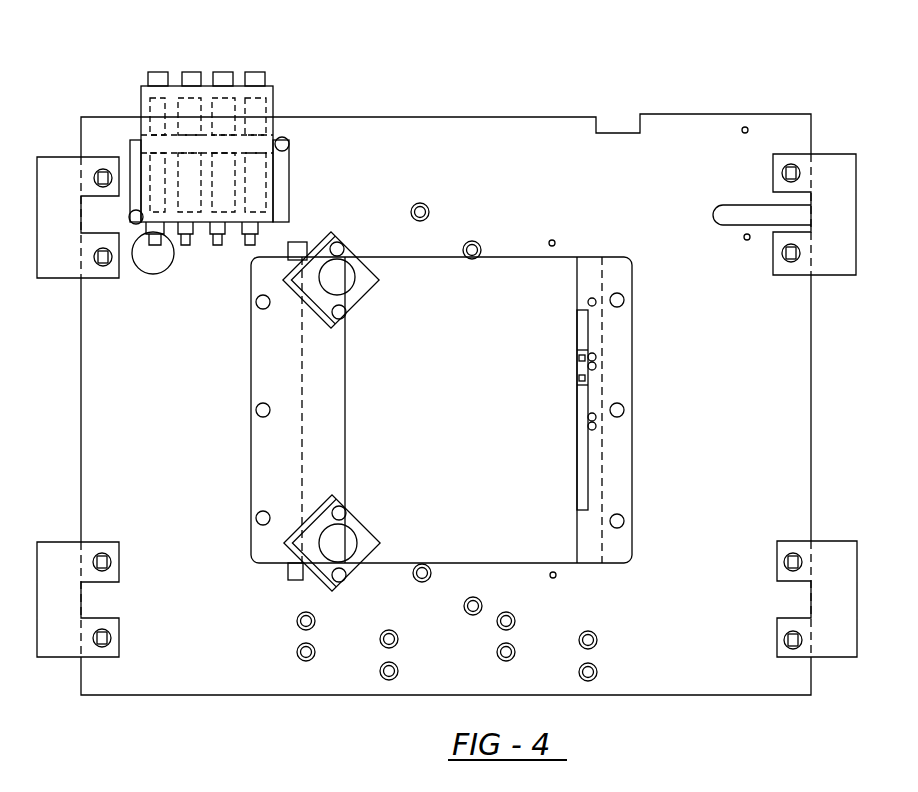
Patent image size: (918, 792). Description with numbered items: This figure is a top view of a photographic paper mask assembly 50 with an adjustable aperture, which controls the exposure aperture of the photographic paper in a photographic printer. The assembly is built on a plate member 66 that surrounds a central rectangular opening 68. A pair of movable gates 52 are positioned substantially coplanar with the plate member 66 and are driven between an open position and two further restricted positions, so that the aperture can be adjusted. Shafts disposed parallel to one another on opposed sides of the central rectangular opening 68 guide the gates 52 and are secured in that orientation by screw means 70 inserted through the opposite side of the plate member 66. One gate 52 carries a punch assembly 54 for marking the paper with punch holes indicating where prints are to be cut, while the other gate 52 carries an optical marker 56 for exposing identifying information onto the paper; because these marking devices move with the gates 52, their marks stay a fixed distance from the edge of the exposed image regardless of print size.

The photographic paper mask assembly 50 is at (730, 114).
The movable gates 52 is at (293, 363).
The punch assembly 54 is at (350, 283).
The optical marker 56 is at (578, 372).
The plate member 66 is at (720, 668).
The central rectangular opening 68 is at (523, 515).
The screw means 70 is at (472, 247).